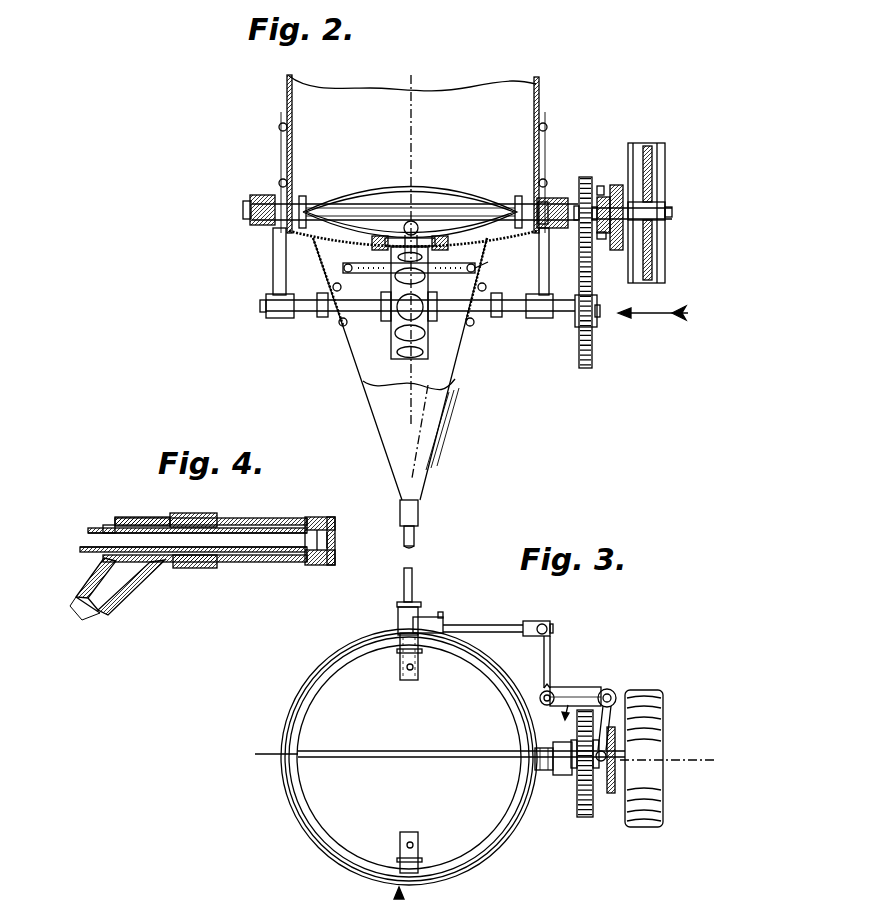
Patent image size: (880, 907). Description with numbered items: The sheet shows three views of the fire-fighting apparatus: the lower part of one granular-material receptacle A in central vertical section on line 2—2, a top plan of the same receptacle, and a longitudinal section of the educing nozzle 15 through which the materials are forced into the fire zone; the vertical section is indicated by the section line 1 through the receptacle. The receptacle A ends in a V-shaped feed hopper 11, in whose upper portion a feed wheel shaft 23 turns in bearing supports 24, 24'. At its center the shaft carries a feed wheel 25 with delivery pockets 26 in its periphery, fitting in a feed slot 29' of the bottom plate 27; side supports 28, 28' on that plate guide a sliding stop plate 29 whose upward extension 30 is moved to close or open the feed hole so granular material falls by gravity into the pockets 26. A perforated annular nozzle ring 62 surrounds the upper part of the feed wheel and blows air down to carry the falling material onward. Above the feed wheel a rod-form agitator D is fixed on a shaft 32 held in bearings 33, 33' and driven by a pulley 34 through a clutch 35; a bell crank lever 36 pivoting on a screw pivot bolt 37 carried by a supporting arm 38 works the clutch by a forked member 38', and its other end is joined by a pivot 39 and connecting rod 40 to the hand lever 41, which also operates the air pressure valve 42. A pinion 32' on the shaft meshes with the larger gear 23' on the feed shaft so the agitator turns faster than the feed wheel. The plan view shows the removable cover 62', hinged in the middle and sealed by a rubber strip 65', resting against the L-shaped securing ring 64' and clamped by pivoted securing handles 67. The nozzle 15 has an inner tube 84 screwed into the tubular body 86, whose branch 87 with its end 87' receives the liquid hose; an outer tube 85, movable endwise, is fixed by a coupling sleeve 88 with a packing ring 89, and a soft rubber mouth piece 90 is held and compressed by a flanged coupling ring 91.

In FIG. 2, the section line 1 is at (413, 263).
In FIG. 3, the section line 2 is at (480, 758).
In FIG. 2, the delivery or feed hopper 11 is at (400, 393).
In FIG. 4, the educing nozzle 15 is at (222, 505).
In FIG. 2, the feed wheel shaft 23 is at (421, 315).
In FIG. 2, the gear wheel or pinion 23' is at (568, 282).
In FIG. 2, the bearing support 24 is at (277, 291).
In FIG. 2, the bearing support 24' is at (546, 291).
In FIG. 2, the feed wheel 25 is at (427, 326).
In FIG. 2, the delivery pocket 26 is at (410, 307).
In FIG. 2, the bottom plate 27 is at (489, 264).
In FIG. 2, the side support 28 is at (395, 267).
In FIG. 2, the side support 28' is at (452, 267).
In FIG. 2, the stop plate 29 is at (433, 213).
In FIG. 2, the feed slot 29' is at (461, 213).
In FIG. 2, the upward extension 30 is at (411, 221).
In FIG. 2, the shaft 32 is at (560, 179).
In FIG. 2, the gear wheel or pinion 32' is at (566, 231).
In FIG. 2, the bearing 33 is at (408, 194).
In FIG. 2, the bearing 33' is at (569, 191).
In FIG. 3, the bearing 33' is at (553, 786).
In FIG. 2, the drive pulley 34 is at (664, 183).
In FIG. 3, the drive pulley 34 is at (644, 758).
In FIG. 2, the clutch mechanism 35 is at (615, 185).
In FIG. 3, the clutch mechanism 35 is at (610, 793).
In FIG. 3, the bell crank lever 36 is at (603, 687).
In FIG. 3, the screw pivot bolt 37 is at (618, 690).
In FIG. 2, the supporting arm 38 is at (615, 246).
In FIG. 3, the supporting arm 38 is at (575, 678).
In FIG. 3, the forked member 38' is at (634, 761).
In FIG. 3, the pivot 39 is at (542, 688).
In FIG. 3, the connecting rod 40 is at (551, 656).
In FIG. 3, the actuating hand lever 41 is at (546, 626).
In FIG. 3, the air pressure valve 42 is at (433, 622).
In FIG. 2, the annular air feed pipe or nozzle ring 62 is at (385, 275).
In FIG. 3, the removable cover 62' is at (409, 757).
In FIG. 3, the securing ring 64' is at (398, 757).
In FIG. 3, the soft rubber strip 65' is at (461, 777).
In FIG. 3, the securing handle 67 is at (418, 679).
In FIG. 4, the inner tube 84 is at (193, 540).
In FIG. 4, the outer tube 85 is at (266, 518).
In FIG. 4, the tubular body 86 is at (140, 518).
In FIG. 4, the branch 87 is at (121, 588).
In FIG. 4, the branch end 87' is at (99, 619).
In FIG. 4, the coupling sleeve 88 is at (192, 513).
In FIG. 4, the packing ring 89 is at (200, 568).
In FIG. 4, the mouth piece 90 is at (335, 542).
In FIG. 4, the flanged coupling ring 91 is at (320, 517).
In FIG. 2, the receptacle A is at (413, 161).
In FIG. 2, the rotating mechanical agitator D is at (352, 171).